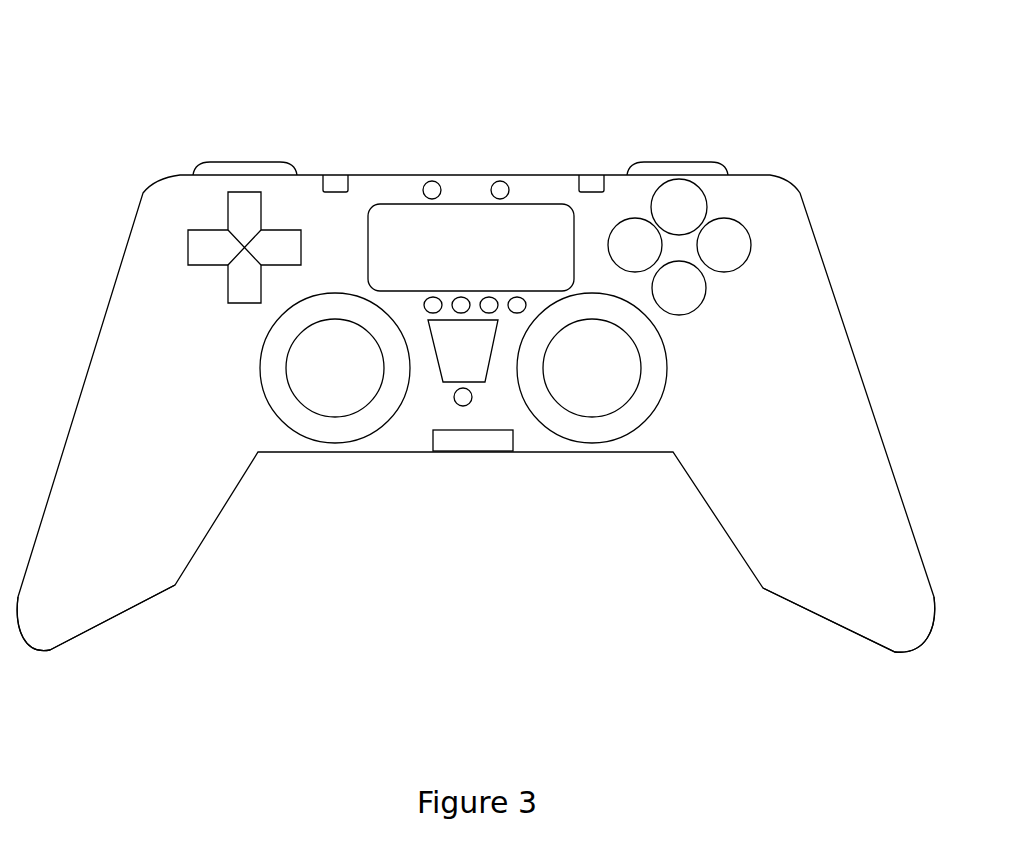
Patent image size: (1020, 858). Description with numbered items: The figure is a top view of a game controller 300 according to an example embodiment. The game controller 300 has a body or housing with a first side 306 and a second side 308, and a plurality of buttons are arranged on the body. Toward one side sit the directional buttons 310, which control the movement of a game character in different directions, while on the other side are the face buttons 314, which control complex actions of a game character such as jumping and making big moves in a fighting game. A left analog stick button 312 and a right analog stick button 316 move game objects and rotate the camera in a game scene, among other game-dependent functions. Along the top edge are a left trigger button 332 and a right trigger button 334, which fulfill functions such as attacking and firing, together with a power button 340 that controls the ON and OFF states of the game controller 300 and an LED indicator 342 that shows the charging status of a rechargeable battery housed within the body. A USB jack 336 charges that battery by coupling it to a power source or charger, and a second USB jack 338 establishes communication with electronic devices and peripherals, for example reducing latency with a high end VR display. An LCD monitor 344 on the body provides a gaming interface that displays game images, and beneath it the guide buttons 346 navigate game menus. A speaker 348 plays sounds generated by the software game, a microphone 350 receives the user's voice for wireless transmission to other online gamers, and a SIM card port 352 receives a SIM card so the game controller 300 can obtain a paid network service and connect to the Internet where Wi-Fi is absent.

The game controller 300 is at (192, 86).
The first side 306 is at (102, 607).
The second side 308 is at (812, 597).
The directional buttons 310 is at (236, 280).
The left analog stick button 312 is at (263, 392).
The face buttons 314 is at (717, 282).
The right analog stick button 316 is at (657, 405).
The left trigger button 332 is at (222, 163).
The right trigger button 334 is at (697, 160).
The USB jack 336 is at (338, 173).
The USB jack 338 is at (587, 173).
The power button 340 is at (434, 181).
The LED indicator 342 is at (501, 181).
The LCD monitor 344 is at (444, 259).
The guide buttons 346 is at (450, 302).
The speaker 348 is at (445, 357).
The microphone 350 is at (453, 397).
The SIM card port 352 is at (488, 442).